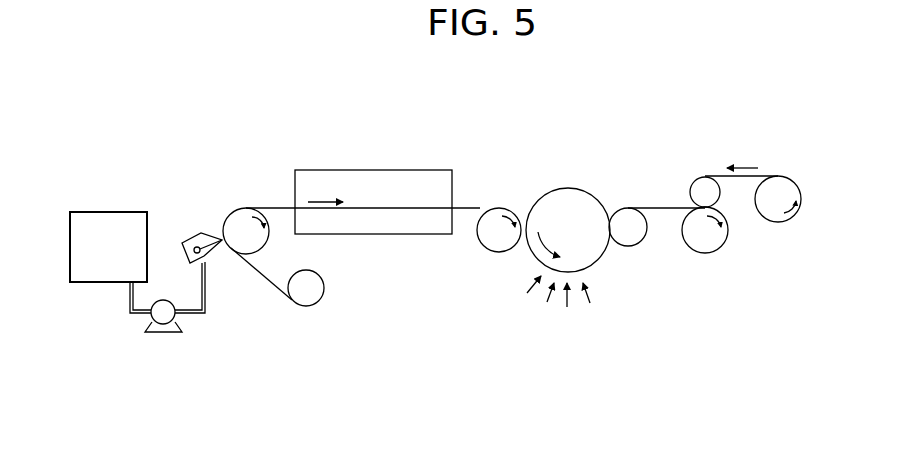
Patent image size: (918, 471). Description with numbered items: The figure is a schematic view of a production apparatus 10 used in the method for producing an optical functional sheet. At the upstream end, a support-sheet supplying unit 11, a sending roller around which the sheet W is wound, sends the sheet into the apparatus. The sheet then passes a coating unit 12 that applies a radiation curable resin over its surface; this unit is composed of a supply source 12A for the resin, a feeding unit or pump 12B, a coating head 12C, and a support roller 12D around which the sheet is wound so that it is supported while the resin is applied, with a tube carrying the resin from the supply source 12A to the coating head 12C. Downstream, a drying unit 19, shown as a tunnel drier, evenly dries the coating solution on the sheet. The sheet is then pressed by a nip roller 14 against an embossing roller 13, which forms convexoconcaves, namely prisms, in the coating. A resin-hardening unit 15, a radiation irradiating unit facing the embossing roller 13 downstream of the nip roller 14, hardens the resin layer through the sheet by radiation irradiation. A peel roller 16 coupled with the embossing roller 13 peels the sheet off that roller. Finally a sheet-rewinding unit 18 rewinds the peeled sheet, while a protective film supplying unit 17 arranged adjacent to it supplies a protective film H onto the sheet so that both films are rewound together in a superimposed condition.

The production apparatus 10 is at (429, 320).
The support-sheet supplying unit 11 is at (334, 290).
The coating unit 12 is at (169, 229).
The supply source 12A is at (113, 211).
The feeding unit (pump) 12B is at (162, 298).
The coating head 12C is at (196, 230).
The support roller 12D is at (247, 207).
The embossing roller 13 is at (564, 185).
The nip roller 14 is at (507, 200).
The resin-hardening unit 15 is at (608, 302).
The peel roller 16 is at (627, 203).
The protective film supplying unit 17 is at (777, 229).
The sheet-rewinding unit 18 is at (705, 259).
The drying unit 19 is at (397, 244).